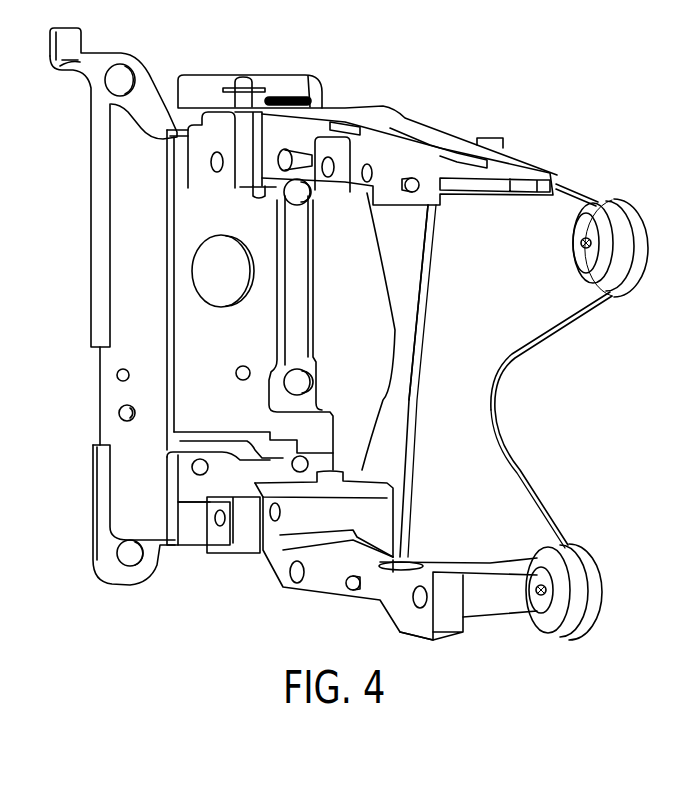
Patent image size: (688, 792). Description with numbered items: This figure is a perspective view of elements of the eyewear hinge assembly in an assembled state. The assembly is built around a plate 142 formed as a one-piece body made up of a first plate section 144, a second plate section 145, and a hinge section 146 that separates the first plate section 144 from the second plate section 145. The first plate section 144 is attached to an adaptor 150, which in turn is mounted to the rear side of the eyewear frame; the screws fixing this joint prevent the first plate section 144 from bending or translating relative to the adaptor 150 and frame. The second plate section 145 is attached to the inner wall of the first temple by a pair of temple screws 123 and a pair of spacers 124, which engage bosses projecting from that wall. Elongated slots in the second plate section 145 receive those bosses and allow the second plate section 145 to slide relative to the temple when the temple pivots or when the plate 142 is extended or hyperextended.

The temple screw 123 is at (589, 232).
The spacer 124 is at (607, 215).
The plate 142 is at (578, 330).
The first plate section 144 is at (400, 270).
The second plate section 145 is at (464, 465).
The hinge section 146 is at (418, 418).
The adaptor 150 is at (197, 503).